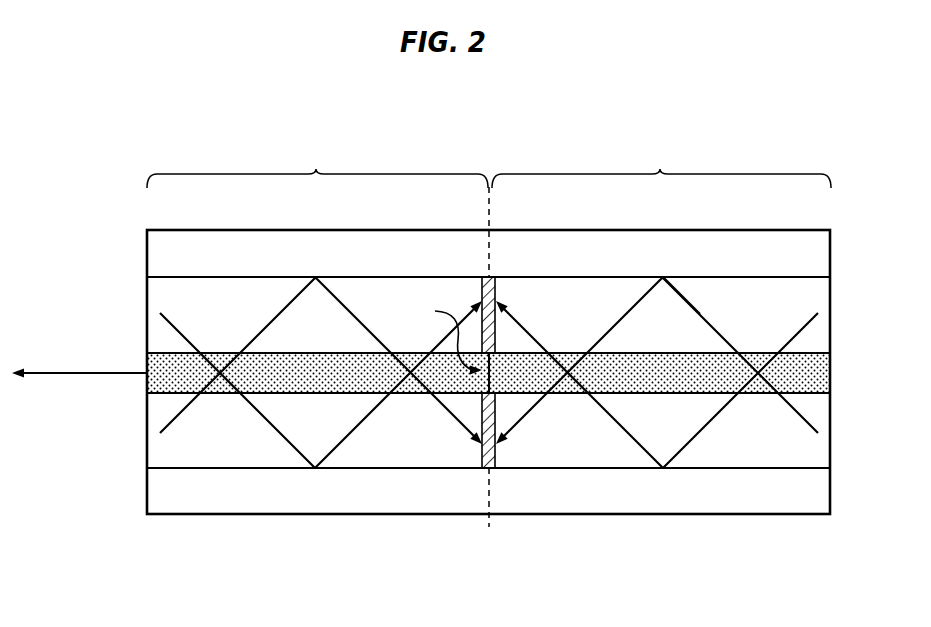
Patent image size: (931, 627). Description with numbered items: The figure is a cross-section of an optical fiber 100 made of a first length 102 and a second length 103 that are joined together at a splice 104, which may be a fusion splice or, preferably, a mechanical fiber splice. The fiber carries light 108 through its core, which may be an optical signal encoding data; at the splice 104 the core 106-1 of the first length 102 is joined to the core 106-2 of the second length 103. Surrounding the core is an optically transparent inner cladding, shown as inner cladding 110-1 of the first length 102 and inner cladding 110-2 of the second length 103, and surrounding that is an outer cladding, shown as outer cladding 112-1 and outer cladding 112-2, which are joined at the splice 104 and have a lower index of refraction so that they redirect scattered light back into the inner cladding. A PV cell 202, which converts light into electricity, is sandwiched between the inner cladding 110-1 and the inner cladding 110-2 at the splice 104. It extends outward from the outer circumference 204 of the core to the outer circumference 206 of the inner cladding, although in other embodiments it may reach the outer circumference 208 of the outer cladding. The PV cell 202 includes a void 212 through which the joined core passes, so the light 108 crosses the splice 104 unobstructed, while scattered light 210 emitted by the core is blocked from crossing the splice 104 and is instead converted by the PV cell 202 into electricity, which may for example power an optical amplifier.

The optical fiber 100 is at (228, 114).
The first length 102 is at (317, 166).
The second length 103 is at (661, 166).
The splice 104 is at (489, 532).
The core of first length 106-1 is at (343, 385).
The core of second length 106-2 is at (688, 385).
The light 108 is at (77, 372).
The inner cladding of first length 110-1 is at (343, 337).
The inner cladding of second length 110-2 is at (688, 337).
The outer cladding of first length 112-1 is at (343, 267).
The outer cladding of second length 112-2 is at (688, 267).
The PV cell 202 is at (496, 289).
The outer circumference of core 204 is at (416, 418).
The outer circumference of inner cladding 206 is at (441, 482).
The outer circumference of outer cladding 208 is at (409, 533).
The scattered light 210 is at (690, 305).
The void 212 is at (441, 336).